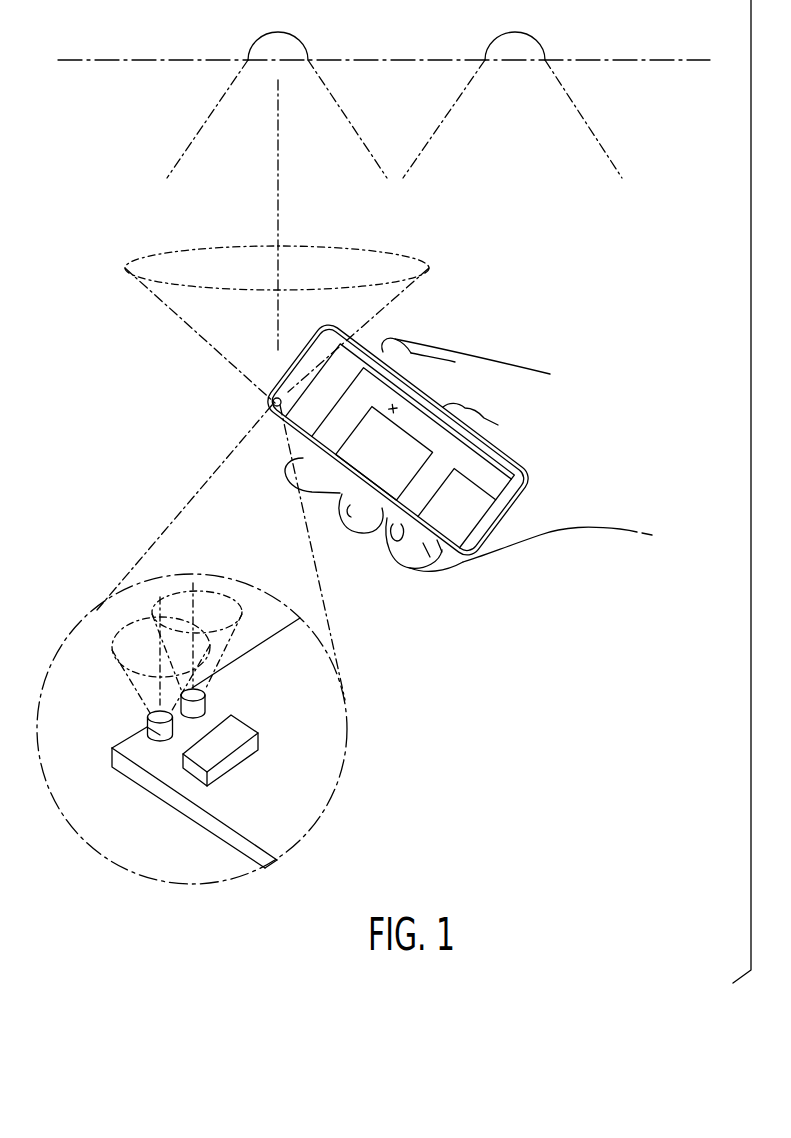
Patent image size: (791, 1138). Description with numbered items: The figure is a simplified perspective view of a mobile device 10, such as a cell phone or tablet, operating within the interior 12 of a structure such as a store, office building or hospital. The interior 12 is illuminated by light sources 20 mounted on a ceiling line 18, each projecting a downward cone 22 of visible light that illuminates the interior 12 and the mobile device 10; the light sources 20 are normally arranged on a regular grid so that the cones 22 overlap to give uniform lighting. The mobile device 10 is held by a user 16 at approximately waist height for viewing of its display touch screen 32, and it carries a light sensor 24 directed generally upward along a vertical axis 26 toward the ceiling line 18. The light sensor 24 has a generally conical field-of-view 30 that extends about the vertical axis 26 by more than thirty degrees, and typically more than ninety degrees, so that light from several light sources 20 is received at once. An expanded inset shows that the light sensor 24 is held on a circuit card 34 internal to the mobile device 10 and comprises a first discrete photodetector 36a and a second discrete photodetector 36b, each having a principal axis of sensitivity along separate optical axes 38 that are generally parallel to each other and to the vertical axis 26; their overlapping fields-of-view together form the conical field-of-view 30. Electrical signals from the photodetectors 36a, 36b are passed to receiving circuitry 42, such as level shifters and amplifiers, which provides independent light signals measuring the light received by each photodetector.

The mobile device 10 is at (200, 383).
The interior 12 is at (496, 200).
The user 16 is at (545, 360).
The ceiling line 18 is at (608, 60).
The light sources 20 is at (278, 32).
The cone 22 is at (207, 118).
The light sensor 24 is at (268, 403).
The vertical axis 26 is at (280, 203).
The conical field-of-view 30 is at (163, 305).
The display touch screen 32 is at (463, 522).
The circuit card 34 is at (247, 820).
The first discrete photodetector 36a is at (160, 741).
The second discrete photodetector 36b is at (193, 718).
The optical axes 38 is at (152, 625).
The receiving circuitry 42 is at (230, 742).